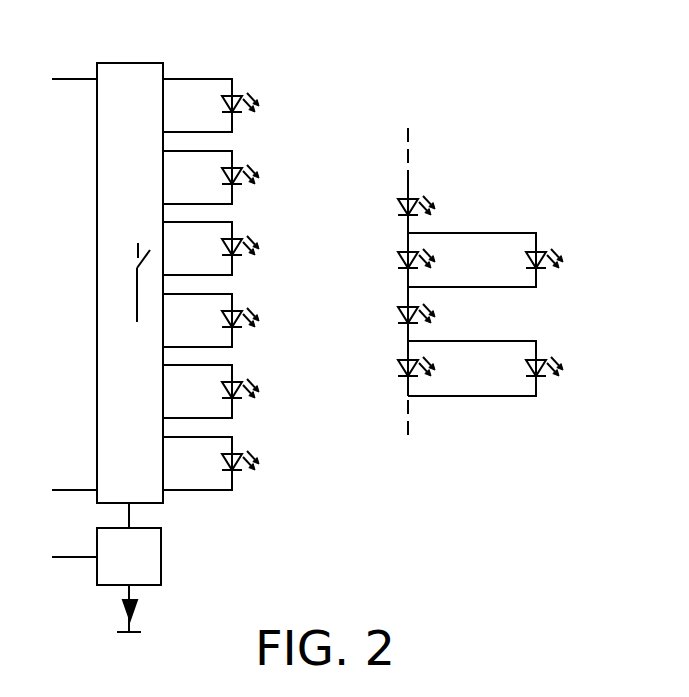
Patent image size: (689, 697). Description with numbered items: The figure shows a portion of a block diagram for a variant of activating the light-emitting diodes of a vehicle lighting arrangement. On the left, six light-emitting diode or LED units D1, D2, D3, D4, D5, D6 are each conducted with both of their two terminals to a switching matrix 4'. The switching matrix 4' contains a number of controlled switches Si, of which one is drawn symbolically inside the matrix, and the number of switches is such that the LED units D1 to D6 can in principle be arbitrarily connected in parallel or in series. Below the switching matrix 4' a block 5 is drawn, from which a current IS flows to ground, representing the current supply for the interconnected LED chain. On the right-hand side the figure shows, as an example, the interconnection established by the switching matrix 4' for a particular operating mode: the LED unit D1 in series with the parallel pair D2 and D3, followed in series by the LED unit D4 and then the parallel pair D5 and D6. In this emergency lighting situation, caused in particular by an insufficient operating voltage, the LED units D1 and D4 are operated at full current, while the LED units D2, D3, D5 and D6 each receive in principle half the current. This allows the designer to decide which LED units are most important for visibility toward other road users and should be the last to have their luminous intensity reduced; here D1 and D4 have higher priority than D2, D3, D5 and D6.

The switching matrix 4' is at (113, 257).
The current source 5 is at (106, 544).
The controlled switch Si is at (131, 282).
The source current IS is at (142, 608).
The LED unit D1 is at (318, 156).
The LED unit D2 is at (318, 219).
The LED unit D3 is at (384, 254).
The LED unit D4 is at (318, 317).
The LED unit D5 is at (318, 379).
The LED unit D6 is at (384, 415).